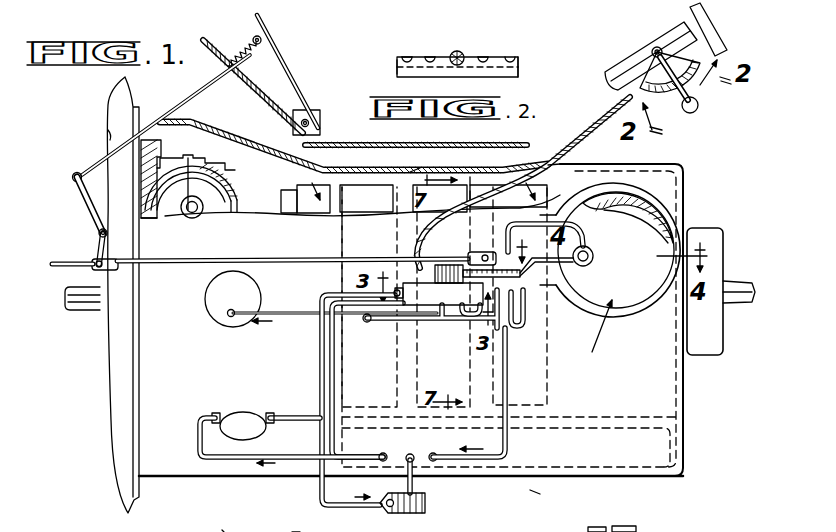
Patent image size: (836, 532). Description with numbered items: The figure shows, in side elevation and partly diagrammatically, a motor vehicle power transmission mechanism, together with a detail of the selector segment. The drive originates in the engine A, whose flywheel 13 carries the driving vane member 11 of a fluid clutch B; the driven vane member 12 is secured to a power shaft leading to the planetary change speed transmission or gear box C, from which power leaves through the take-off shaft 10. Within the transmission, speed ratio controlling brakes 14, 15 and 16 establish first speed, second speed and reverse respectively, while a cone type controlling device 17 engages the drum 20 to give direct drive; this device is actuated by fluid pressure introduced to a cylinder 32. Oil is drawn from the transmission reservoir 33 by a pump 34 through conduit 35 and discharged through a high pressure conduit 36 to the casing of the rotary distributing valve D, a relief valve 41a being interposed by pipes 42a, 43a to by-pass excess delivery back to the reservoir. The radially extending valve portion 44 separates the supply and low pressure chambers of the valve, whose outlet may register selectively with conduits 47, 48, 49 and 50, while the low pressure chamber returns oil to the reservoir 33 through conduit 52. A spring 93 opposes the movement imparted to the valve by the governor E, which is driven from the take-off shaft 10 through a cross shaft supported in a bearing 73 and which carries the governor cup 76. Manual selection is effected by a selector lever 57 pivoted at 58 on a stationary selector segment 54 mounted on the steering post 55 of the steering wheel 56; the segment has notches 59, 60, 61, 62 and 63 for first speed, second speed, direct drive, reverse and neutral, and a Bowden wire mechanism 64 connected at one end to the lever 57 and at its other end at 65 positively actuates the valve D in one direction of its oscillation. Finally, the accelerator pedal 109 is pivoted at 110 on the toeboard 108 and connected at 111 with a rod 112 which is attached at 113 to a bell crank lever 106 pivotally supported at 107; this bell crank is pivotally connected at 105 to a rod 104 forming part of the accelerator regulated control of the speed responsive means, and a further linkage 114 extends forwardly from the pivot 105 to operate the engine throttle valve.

In FIG. 1, the engine A is at (118, 100).
In FIG. 1, the clutch B is at (218, 180).
In FIG. 1, the change speed transmission C is at (420, 168).
In FIG. 1, the rotary distributing valve D is at (428, 284).
In FIG. 1, the governor E is at (610, 278).
In FIG. 1, the power take-off shaft 10 is at (740, 282).
In FIG. 1, the driving vane member 11 is at (224, 186).
In FIG. 1, the driven vane member 12 is at (166, 220).
In FIG. 1, the engine flywheel 13 is at (108, 138).
In FIG. 1, the speed ratio controlling brake 14 is at (470, 177).
In FIG. 1, the speed ratio controlling brake 15 is at (562, 164).
In FIG. 1, the speed ratio controlling brake 16 is at (365, 170).
In FIG. 1, the controlling device 17 is at (345, 140).
In FIG. 1, the drum 20 is at (303, 187).
In FIG. 1, the cylinder 32 is at (248, 296).
In FIG. 1, the transmission reservoir 33 is at (537, 488).
In FIG. 1, the pump 34 is at (238, 413).
In FIG. 1, the conduit 35 is at (250, 460).
In FIG. 1, the high pressure conduit 36 is at (285, 400).
In FIG. 1, the relief valve 41a is at (398, 511).
In FIG. 1, the pipe 42a is at (318, 448).
In FIG. 1, the pipe 43a is at (413, 480).
In FIG. 1, the radially extending valve portion 44 is at (216, 524).
In FIG. 1, the conduit 47 is at (445, 332).
In FIG. 1, the conduit 48 is at (395, 318).
In FIG. 1, the conduit 49 is at (258, 318).
In FIG. 1, the conduit 50 is at (588, 330).
In FIG. 1, the conduit 52 is at (500, 390).
In FIG. 1, the selector segment 54 is at (708, 14).
In FIG. 2, the selector segment 54 is at (519, 73).
In FIG. 1, the steering post 55 is at (617, 64).
In FIG. 1, the steering wheel 56 is at (724, 41).
In FIG. 1, the selector lever 57 is at (698, 110).
In FIG. 2, the selector lever 57 is at (462, 45).
In FIG. 1, the pivot 58 is at (657, 47).
In FIG. 2, the notch 59 is at (462, 74).
In FIG. 2, the notch 60 is at (413, 72).
In FIG. 2, the notch 61 is at (397, 66).
In FIG. 2, the notch 62 is at (519, 65).
In FIG. 2, the notch 63 is at (505, 74).
In FIG. 1, the Bowden wire mechanism 64 is at (600, 118).
In FIG. 1, the connection 65 is at (301, 525).
In FIG. 1, the bearing 73 is at (583, 530).
In FIG. 1, the governor cup 76 is at (630, 215).
In FIG. 1, the spring 93 is at (483, 252).
In FIG. 1, the rod 104 is at (236, 259).
In FIG. 1, the pivotal connection 105 is at (92, 265).
In FIG. 1, the bell crank lever 106 is at (88, 200).
In FIG. 1, the pivotal support 107 is at (100, 233).
In FIG. 1, the toeboard 108 is at (255, 93).
In FIG. 1, the accelerator pedal 109 is at (292, 84).
In FIG. 1, the pivot 110 is at (314, 118).
In FIG. 1, the connection 111 is at (263, 42).
In FIG. 1, the rod 112 is at (205, 87).
In FIG. 1, the connection 113 is at (74, 173).
In FIG. 1, the linkage 114 is at (75, 267).